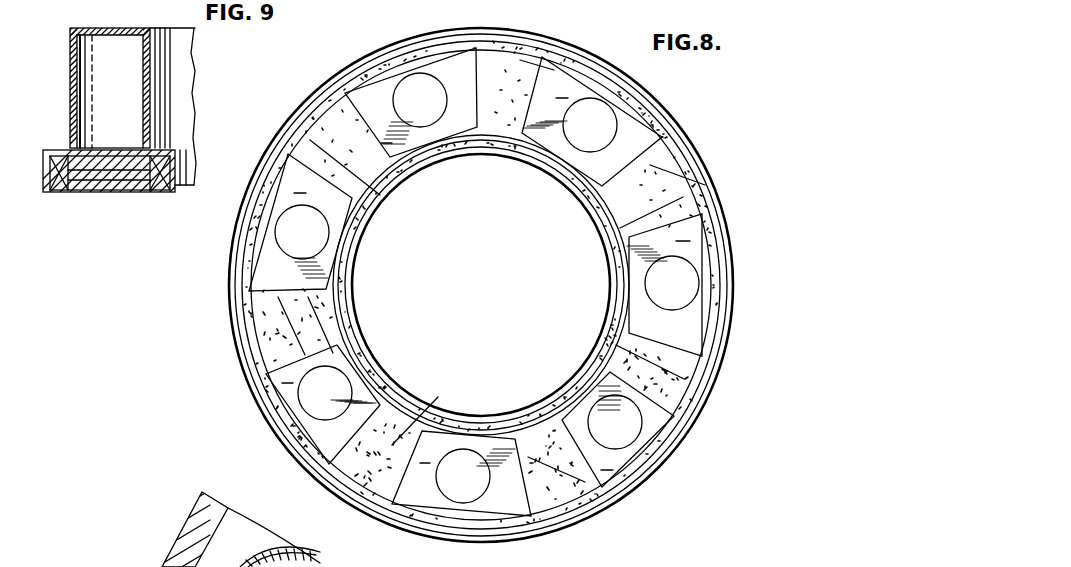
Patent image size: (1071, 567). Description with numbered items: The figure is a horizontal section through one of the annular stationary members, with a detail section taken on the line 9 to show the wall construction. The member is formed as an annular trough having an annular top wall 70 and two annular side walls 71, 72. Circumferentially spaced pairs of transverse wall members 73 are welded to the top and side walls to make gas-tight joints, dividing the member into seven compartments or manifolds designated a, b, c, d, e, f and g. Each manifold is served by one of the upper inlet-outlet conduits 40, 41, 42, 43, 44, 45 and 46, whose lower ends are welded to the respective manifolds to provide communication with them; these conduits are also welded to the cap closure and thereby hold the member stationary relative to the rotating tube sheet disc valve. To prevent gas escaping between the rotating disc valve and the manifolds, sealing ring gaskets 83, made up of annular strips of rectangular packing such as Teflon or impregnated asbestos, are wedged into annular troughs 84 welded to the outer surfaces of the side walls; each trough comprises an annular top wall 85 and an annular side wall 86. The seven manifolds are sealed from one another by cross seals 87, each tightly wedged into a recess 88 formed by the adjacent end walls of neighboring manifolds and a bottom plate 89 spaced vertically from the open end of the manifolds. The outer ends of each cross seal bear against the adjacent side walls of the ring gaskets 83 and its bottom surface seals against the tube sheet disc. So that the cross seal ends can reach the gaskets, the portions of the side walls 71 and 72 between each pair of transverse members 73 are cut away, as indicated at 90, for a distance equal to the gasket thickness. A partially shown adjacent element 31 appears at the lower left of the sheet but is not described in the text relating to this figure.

In FIG. 8, the section line 9— 9 is at (372, 307).
In FIG. 8, the ring member 31 is at (221, 528).
In FIG. 8, the upper inlet-outlet conduit 40 is at (689, 289).
In FIG. 8, the upper inlet-outlet conduit 41 is at (607, 106).
In FIG. 8, the upper inlet-outlet conduit 42 is at (417, 78).
In FIG. 8, the upper inlet-outlet conduit 43 is at (284, 229).
In FIG. 8, the upper inlet-outlet conduit 44 is at (323, 415).
In FIG. 8, the upper inlet-outlet conduit 45 is at (463, 503).
In FIG. 8, the upper inlet-outlet conduit 46 is at (635, 424).
In FIG. 9, the annular top wall 70 is at (122, 28).
In FIG. 8, the annular side wall 71 is at (445, 62).
In FIG. 9, the annular side wall 71 is at (70, 80).
In FIG. 8, the annular side wall 72 is at (367, 378).
In FIG. 9, the annular side wall 72 is at (144, 107).
In FIG. 8, the wall members 73 is at (467, 123).
In FIG. 9, the wall members 73 is at (131, 67).
In FIG. 8, the sealing ring gaskets 83 is at (302, 429).
In FIG. 9, the sealing ring gaskets 83 is at (55, 199).
In FIG. 8, the annular troughs 84 is at (226, 274).
In FIG. 9, the annular troughs 84 is at (42, 141).
In FIG. 9, the annular top wall 85 is at (53, 148).
In FIG. 9, the annular side wall 86 is at (48, 182).
In FIG. 8, the cross seals 87 is at (520, 52).
In FIG. 9, the cross seals 87 is at (103, 192).
In FIG. 8, the recess 88 is at (540, 62).
In FIG. 9, the bottom plate 89 is at (125, 148).
In FIG. 9, the cut-away portion 90 is at (131, 192).